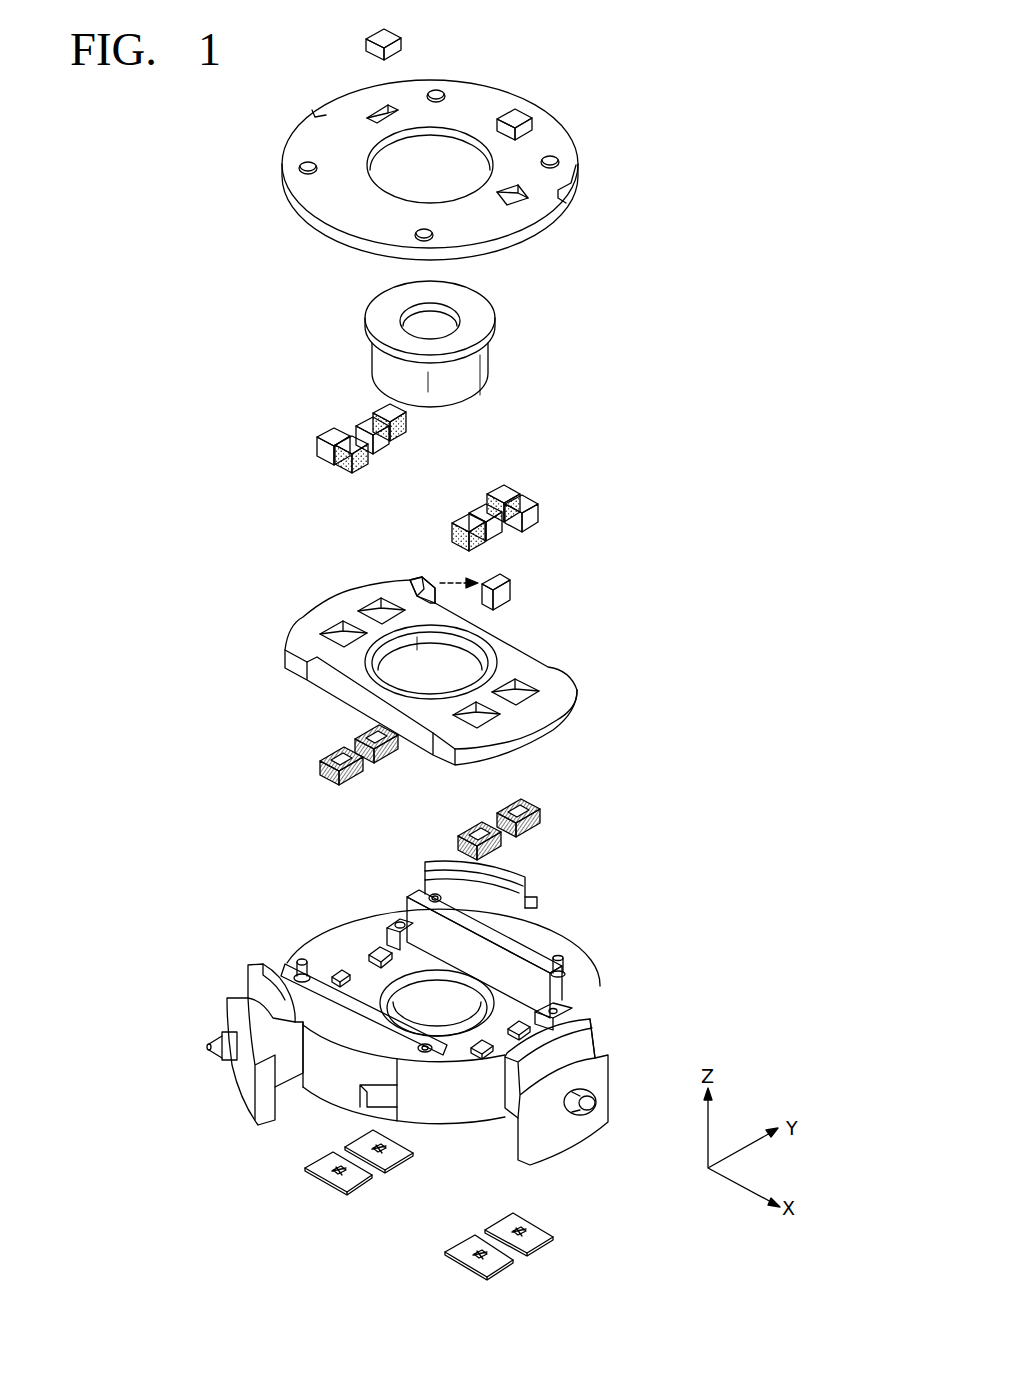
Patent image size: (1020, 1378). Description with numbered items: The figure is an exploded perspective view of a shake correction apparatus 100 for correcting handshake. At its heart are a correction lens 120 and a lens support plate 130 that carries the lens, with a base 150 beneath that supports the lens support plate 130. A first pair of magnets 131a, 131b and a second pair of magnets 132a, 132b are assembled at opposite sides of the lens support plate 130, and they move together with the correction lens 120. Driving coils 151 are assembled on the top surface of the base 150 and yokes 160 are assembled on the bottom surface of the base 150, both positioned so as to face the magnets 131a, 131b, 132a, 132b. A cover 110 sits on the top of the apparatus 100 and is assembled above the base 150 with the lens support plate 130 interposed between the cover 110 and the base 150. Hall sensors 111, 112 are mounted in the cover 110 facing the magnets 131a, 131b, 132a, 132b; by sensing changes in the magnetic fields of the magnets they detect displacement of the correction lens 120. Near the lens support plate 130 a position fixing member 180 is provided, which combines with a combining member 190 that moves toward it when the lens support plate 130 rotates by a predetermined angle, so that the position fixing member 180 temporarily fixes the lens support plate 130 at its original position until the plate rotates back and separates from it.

The shake correction apparatus 100 is at (650, 78).
The cover 110 is at (553, 135).
The hall sensor 111 is at (370, 35).
The hall sensor 112 is at (520, 110).
The correction lens 120 is at (458, 328).
The lens support plate 130 is at (550, 723).
The first pair magnet 131a is at (370, 415).
The first pair magnet 131b is at (462, 518).
The second pair magnet 132a is at (522, 497).
The second pair magnet 132b is at (323, 437).
The base 150 is at (546, 938).
The driving coil 151 is at (535, 832).
The yoke 160 is at (530, 1235).
The position fixing member 180 is at (510, 580).
The combining member 190 is at (415, 578).